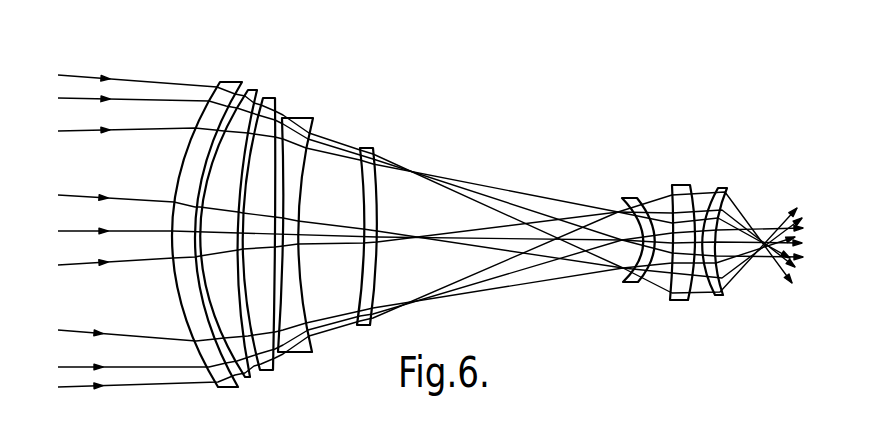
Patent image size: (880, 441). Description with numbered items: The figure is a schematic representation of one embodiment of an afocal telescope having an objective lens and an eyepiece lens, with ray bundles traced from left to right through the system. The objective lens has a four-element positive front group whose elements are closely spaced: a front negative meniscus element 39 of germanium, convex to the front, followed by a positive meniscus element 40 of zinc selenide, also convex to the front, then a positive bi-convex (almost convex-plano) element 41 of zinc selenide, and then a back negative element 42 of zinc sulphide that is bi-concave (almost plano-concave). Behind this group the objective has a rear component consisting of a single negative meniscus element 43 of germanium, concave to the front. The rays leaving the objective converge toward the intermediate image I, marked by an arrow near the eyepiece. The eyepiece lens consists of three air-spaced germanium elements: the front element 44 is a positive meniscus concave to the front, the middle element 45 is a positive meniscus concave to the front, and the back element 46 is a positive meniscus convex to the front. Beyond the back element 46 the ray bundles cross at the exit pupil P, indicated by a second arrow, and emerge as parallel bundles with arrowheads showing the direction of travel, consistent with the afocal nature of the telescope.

The front negative meniscus element 39 is at (230, 82).
The positive meniscus element 40 is at (253, 90).
The positive bi-convex element 41 is at (270, 98).
The back negative element 42 is at (298, 117).
The negative meniscus element 43 is at (365, 147).
The front element 44 is at (627, 197).
The middle element 45 is at (677, 185).
The back element 46 is at (725, 188).
The intermediate image I is at (609, 282).
The exit pupil P is at (752, 283).